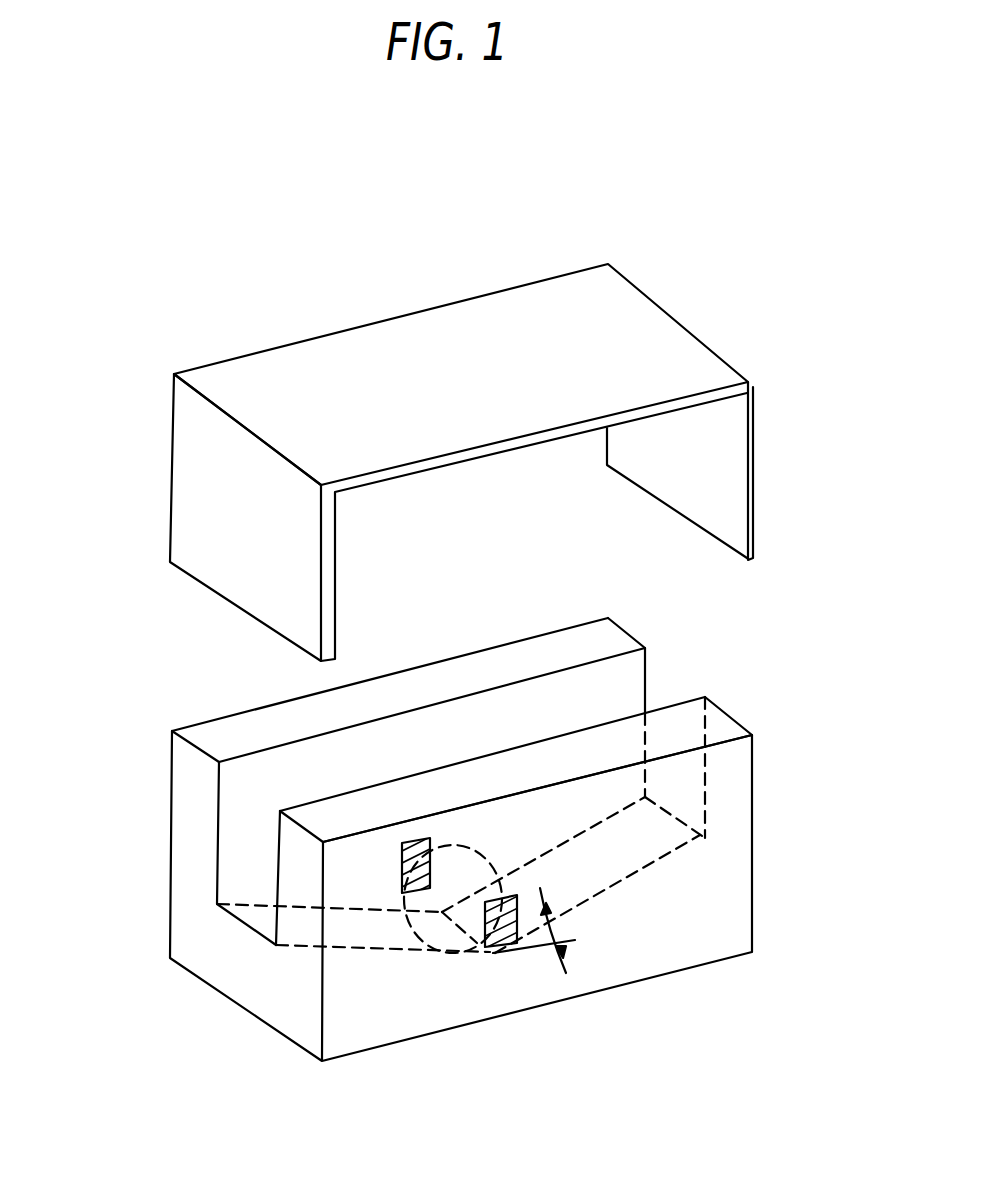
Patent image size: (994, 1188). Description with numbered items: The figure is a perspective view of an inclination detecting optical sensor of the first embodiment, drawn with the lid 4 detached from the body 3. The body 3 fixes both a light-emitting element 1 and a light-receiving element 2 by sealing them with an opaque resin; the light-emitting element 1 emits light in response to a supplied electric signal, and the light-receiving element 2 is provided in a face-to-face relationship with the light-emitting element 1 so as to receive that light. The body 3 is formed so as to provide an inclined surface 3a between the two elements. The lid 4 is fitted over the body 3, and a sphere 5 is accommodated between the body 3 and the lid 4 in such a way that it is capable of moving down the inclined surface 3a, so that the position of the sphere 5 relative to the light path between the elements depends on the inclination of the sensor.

The light-emitting element 1 is at (492, 845).
The light-receiving element 2 is at (540, 888).
The body 3 is at (473, 839).
The inclined surface 3a is at (262, 913).
The lid 4 is at (528, 313).
The sphere 5 is at (487, 857).